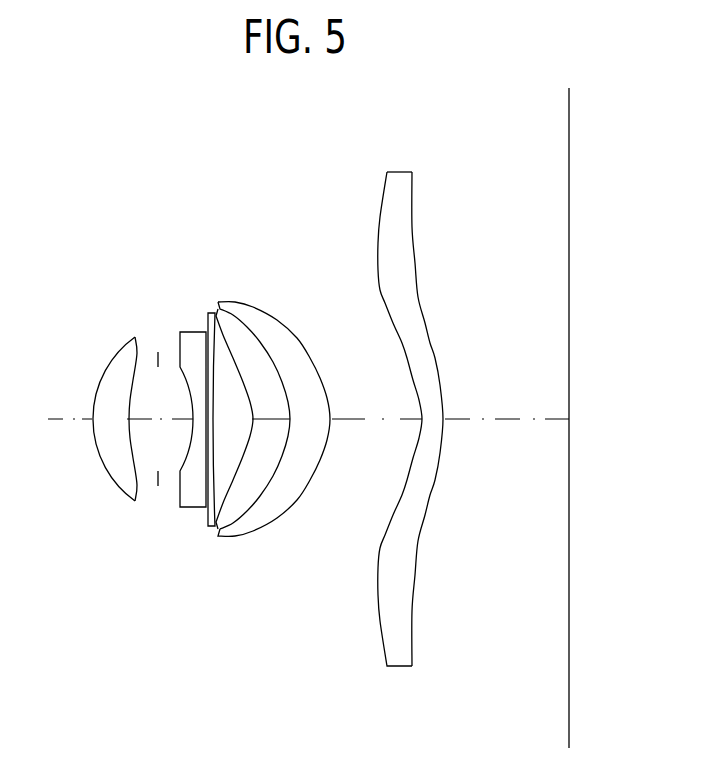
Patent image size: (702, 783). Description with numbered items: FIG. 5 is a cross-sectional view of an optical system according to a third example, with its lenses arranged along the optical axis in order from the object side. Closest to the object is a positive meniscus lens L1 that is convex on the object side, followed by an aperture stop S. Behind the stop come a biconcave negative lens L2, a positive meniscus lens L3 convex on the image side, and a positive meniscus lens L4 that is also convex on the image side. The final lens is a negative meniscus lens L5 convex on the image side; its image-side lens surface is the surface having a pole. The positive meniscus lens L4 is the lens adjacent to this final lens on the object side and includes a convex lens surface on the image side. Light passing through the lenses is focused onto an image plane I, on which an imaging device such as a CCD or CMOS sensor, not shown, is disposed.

The positive meniscus lens L1 is at (133, 336).
The biconcave negative lens L2 is at (187, 331).
The positive meniscus lens L3 is at (208, 313).
The positive meniscus lens L4 is at (233, 300).
The negative meniscus lens L5 is at (400, 172).
The aperture stop S is at (159, 486).
The image plane I is at (569, 733).